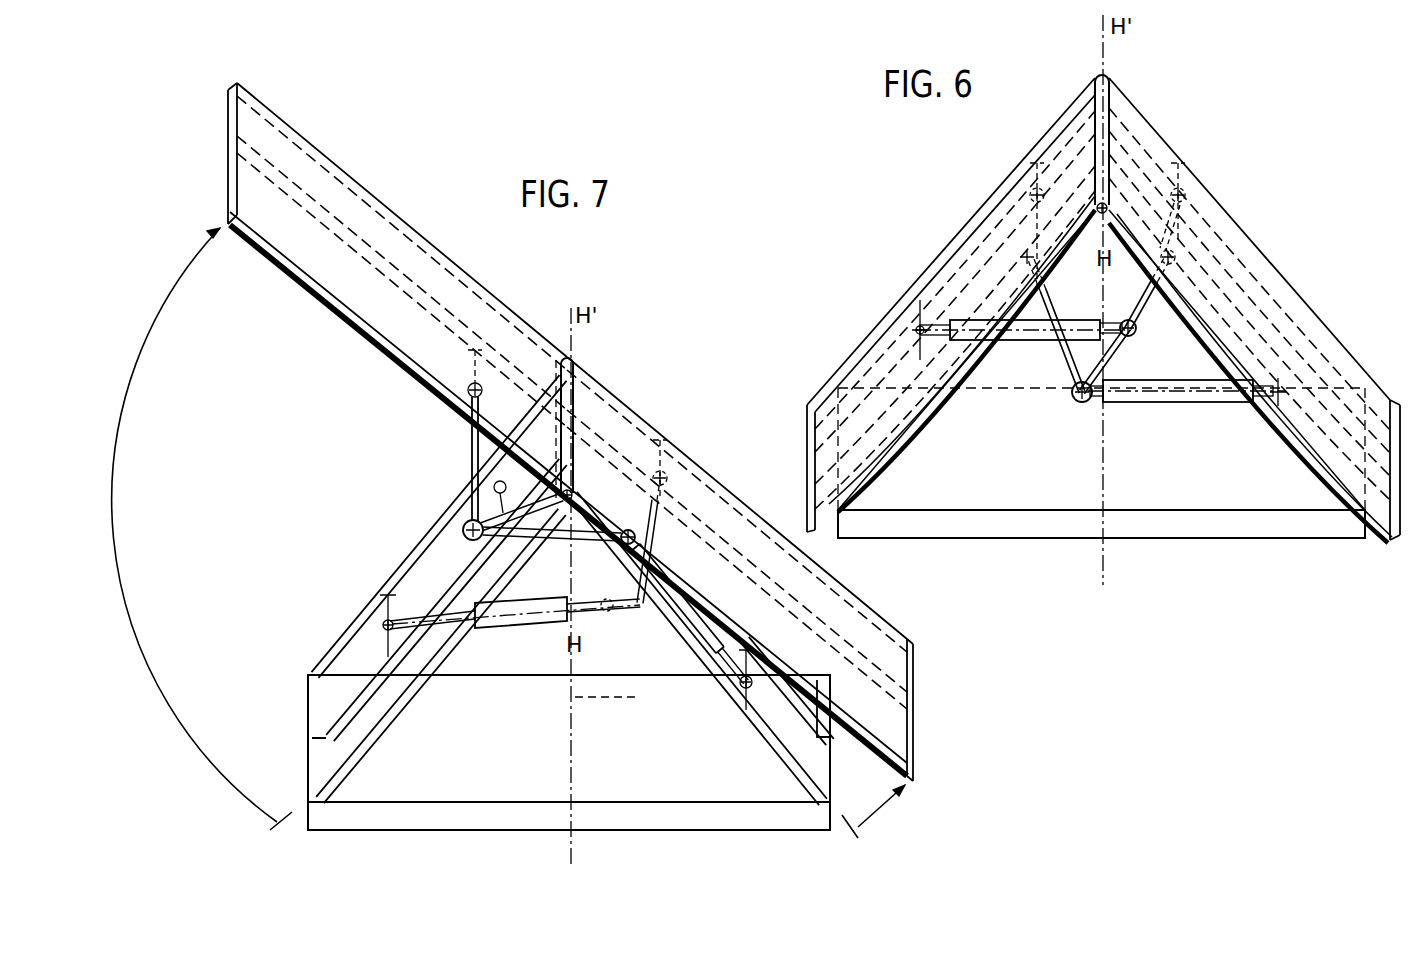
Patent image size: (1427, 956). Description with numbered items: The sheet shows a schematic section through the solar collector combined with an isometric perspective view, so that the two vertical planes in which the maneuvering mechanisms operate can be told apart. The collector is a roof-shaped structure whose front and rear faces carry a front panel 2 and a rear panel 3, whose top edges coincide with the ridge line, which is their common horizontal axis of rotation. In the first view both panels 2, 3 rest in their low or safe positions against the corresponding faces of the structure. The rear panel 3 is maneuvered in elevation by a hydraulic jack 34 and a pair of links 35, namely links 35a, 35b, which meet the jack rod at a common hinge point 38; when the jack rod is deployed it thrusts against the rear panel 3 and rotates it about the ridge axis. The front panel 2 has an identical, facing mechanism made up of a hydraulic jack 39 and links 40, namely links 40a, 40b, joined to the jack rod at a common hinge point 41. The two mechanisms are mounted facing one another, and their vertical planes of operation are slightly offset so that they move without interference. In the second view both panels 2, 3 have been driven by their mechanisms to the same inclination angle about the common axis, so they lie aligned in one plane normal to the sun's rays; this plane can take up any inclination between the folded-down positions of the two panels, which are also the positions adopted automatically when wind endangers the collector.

In FIG. 6, the front panel 2 is at (1334, 436).
In FIG. 7, the front panel 2 is at (890, 731).
In FIG. 6, the rear panel 3 is at (885, 426).
In FIG. 7, the rear panel 3 is at (287, 226).
In FIG. 6, the hydraulic jack 34 is at (1209, 403).
In FIG. 7, the hydraulic jack 34 is at (684, 672).
In FIG. 6, the links 35 is at (858, 214).
In FIG. 7, the links 35 is at (417, 446).
In FIG. 6, the link 35a is at (1088, 273).
In FIG. 7, the link 35a is at (471, 466).
In FIG. 6, the link 35b is at (1042, 293).
In FIG. 7, the link 35b is at (478, 514).
In FIG. 6, the common hinge point 38 is at (1075, 403).
In FIG. 7, the common hinge point 38 is at (463, 528).
In FIG. 6, the hydraulic jack 39 is at (1022, 343).
In FIG. 7, the hydraulic jack 39 is at (492, 632).
In FIG. 6, the links 40 is at (1333, 260).
In FIG. 7, the links 40 is at (753, 410).
In FIG. 6, the link 40a is at (1173, 238).
In FIG. 7, the link 40a is at (660, 505).
In FIG. 6, the link 40b is at (1110, 298).
In FIG. 7, the link 40b is at (606, 575).
In FIG. 6, the hinge point 41 is at (1135, 336).
In FIG. 7, the hinge point 41 is at (612, 634).